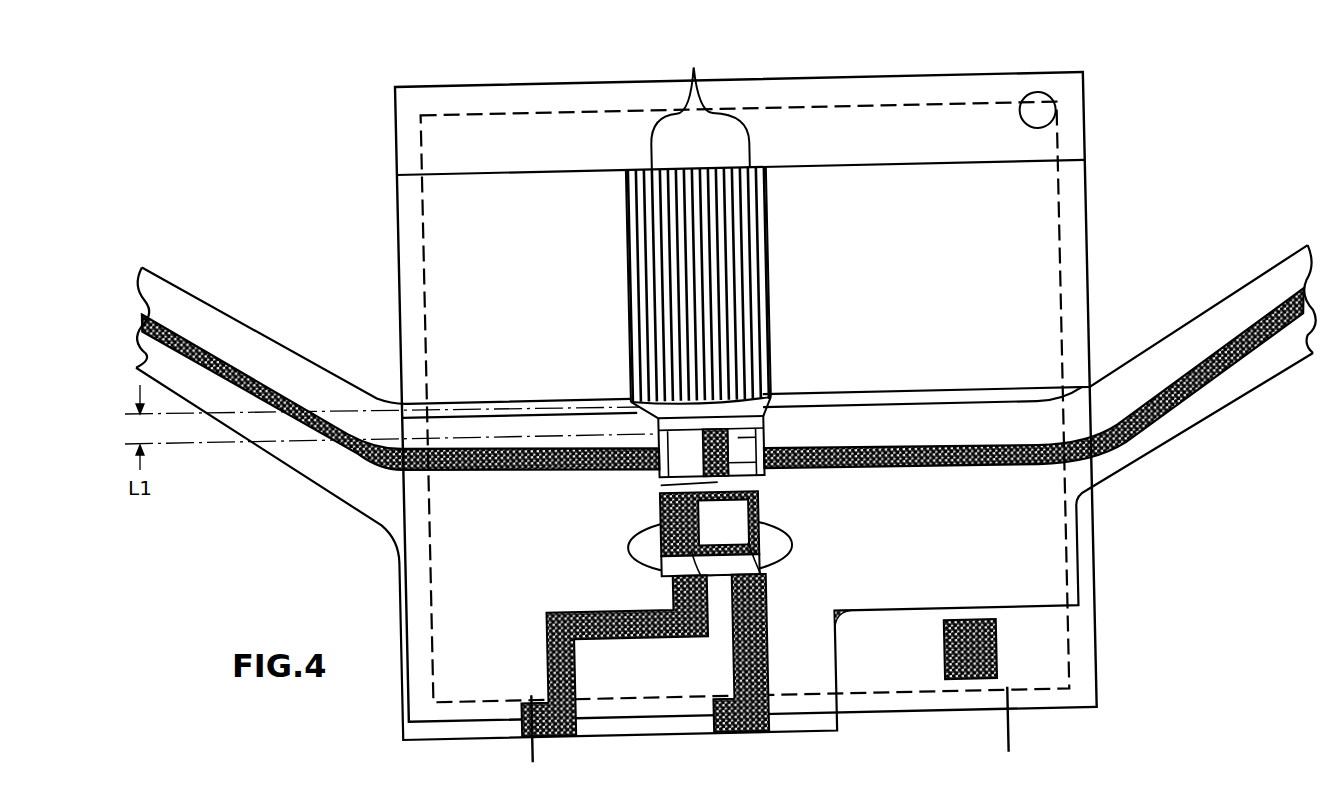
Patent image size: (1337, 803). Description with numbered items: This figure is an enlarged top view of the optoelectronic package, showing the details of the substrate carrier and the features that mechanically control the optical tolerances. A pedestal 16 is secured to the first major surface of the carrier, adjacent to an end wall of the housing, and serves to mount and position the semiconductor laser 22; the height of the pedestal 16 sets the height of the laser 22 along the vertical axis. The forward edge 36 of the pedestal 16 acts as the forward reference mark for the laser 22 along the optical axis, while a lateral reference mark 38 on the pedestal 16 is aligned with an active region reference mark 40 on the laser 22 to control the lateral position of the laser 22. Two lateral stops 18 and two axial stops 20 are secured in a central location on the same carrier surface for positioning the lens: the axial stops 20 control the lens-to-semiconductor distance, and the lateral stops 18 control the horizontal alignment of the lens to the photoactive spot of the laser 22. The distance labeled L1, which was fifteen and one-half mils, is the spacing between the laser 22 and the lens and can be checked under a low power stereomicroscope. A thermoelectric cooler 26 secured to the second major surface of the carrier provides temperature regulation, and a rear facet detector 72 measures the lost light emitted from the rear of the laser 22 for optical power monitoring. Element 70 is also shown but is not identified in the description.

The pedestal 16 is at (680, 447).
The lateral stops 18 is at (695, 73).
The axial stops 20 is at (1017, 160).
The semiconductor laser 22 is at (742, 432).
The thermoelectric cooler 26 is at (901, 103).
The forward edge 36 is at (713, 430).
The lateral reference mark 38 is at (700, 484).
The active region reference mark 40 is at (727, 463).
The capacitor 70 is at (987, 648).
The rear facet detector 72 is at (735, 527).